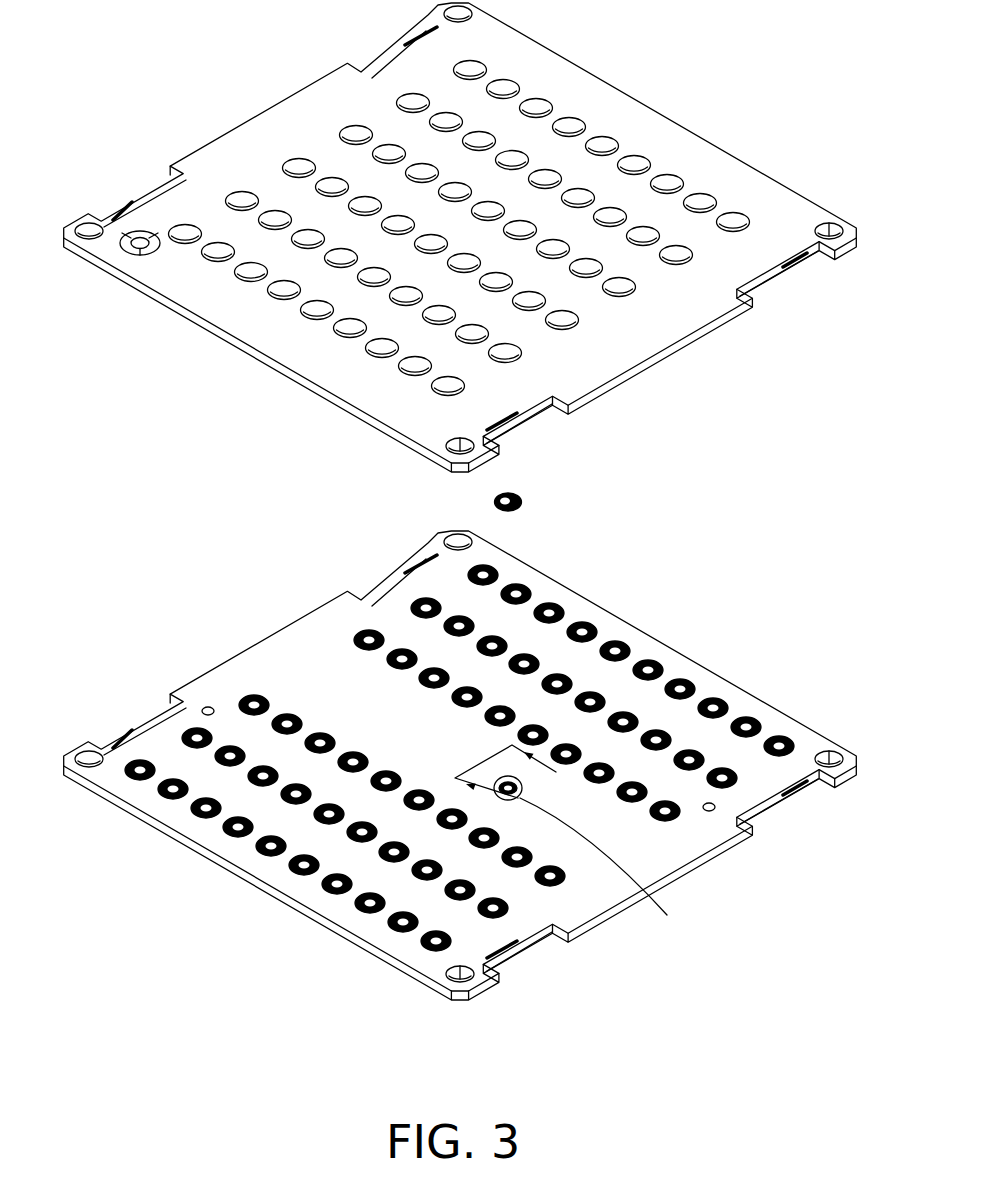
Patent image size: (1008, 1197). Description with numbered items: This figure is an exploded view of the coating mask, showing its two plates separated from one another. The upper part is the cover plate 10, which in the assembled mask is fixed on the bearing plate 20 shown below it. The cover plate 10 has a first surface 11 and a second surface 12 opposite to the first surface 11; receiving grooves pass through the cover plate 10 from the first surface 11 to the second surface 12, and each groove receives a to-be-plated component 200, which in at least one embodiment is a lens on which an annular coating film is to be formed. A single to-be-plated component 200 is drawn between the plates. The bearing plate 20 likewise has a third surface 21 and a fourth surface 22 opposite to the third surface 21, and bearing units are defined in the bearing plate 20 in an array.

The cover plate 10 is at (460, 237).
The first surface 11 is at (658, 366).
The second surface 12 is at (636, 122).
The bearing plate 20 is at (460, 801).
The third surface 21 is at (674, 668).
The fourth surface 22 is at (480, 993).
The to-be-plated component 200 is at (523, 504).